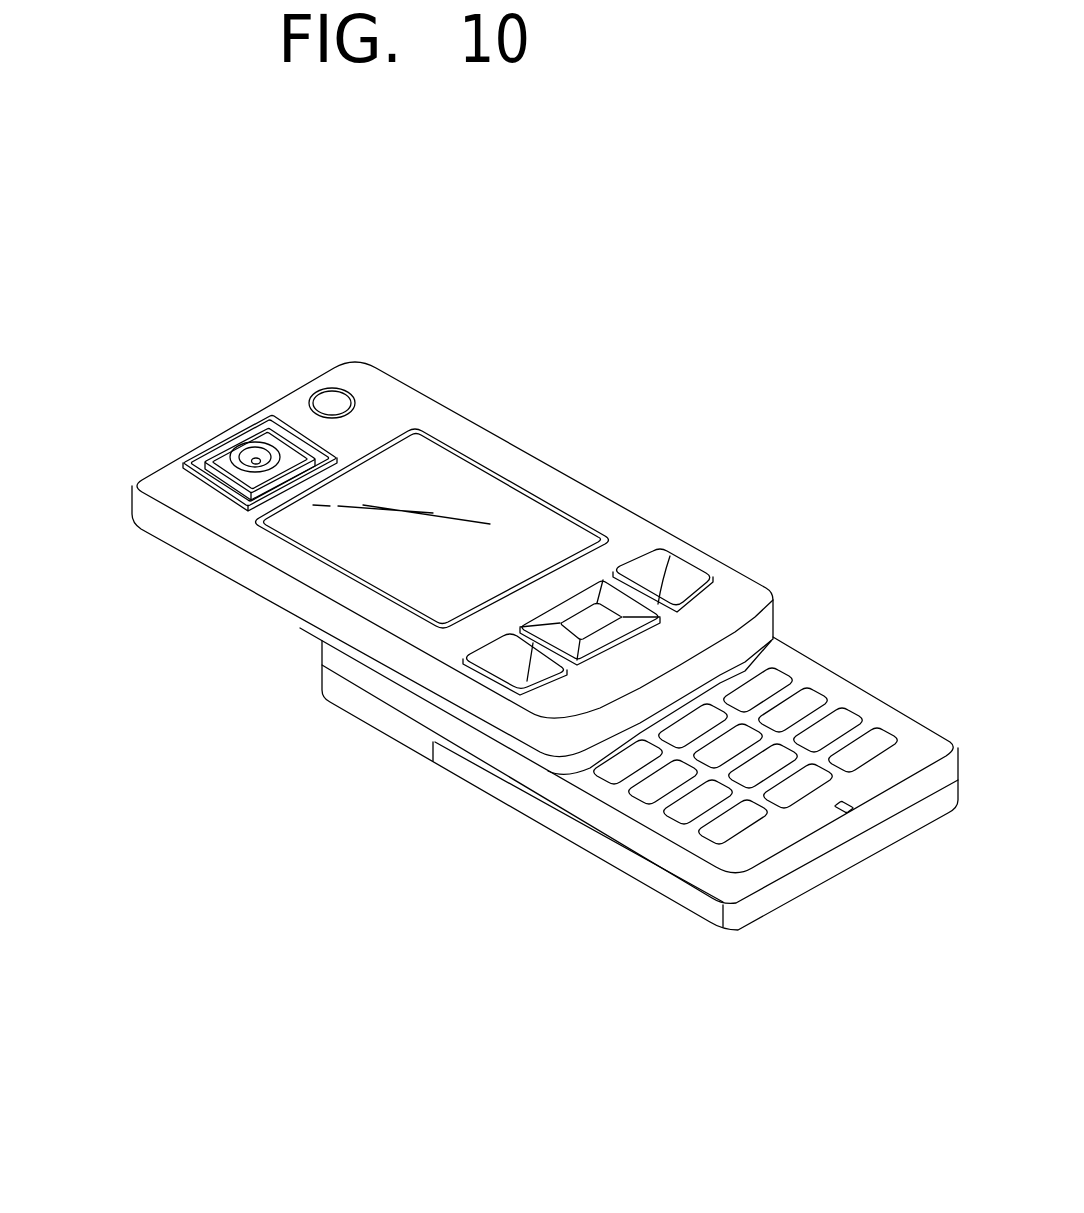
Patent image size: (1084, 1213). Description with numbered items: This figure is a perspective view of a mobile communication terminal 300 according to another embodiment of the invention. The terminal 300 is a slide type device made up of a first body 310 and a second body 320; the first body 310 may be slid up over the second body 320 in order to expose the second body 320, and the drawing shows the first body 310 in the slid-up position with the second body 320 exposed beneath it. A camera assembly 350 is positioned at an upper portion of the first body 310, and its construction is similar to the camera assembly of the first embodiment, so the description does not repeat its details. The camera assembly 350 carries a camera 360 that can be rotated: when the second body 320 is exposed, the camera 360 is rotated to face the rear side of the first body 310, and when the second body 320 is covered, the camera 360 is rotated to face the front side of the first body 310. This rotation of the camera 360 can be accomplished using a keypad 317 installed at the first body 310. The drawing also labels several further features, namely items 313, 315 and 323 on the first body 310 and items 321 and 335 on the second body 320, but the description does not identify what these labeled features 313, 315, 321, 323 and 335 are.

The mobile communication terminal 300 is at (610, 338).
The first body 310 is at (229, 591).
The display unit 313 is at (432, 468).
The audio output unit 315 is at (333, 402).
The keypad 317 is at (648, 562).
The second body 320 is at (754, 937).
The keypad 321 is at (847, 723).
The camera window 323 is at (228, 492).
The interface slot 335 is at (530, 803).
The camera assembly 350 is at (252, 437).
The camera 360 is at (245, 452).